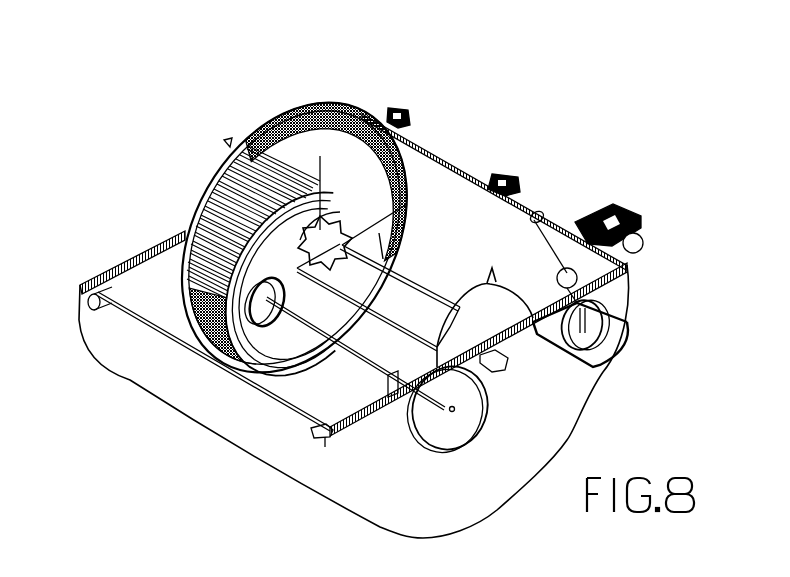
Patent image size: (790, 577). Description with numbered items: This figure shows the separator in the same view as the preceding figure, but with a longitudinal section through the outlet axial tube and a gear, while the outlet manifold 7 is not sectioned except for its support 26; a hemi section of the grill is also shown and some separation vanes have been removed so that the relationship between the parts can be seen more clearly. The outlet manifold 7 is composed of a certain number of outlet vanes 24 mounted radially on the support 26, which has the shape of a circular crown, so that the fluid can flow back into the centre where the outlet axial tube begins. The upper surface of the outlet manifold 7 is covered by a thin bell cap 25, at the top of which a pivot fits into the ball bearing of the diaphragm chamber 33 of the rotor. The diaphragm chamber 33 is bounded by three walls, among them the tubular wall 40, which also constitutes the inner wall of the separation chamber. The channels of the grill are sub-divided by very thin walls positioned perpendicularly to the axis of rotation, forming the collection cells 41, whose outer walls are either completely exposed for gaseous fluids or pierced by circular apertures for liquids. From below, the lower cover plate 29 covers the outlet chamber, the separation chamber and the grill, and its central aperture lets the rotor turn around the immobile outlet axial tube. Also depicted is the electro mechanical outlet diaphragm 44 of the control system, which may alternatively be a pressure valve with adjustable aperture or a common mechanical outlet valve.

The outlet manifold 7 is at (385, 250).
The outlet vanes 24 is at (313, 205).
The bell cap 25 is at (307, 181).
The support 26 is at (320, 157).
The lower cover plate 29 is at (397, 220).
The diaphragm chamber 33 is at (212, 283).
The tubular wall 40 is at (208, 242).
The collection cells 41 is at (225, 143).
The electro mechanical outlet diaphragm 44 is at (603, 308).